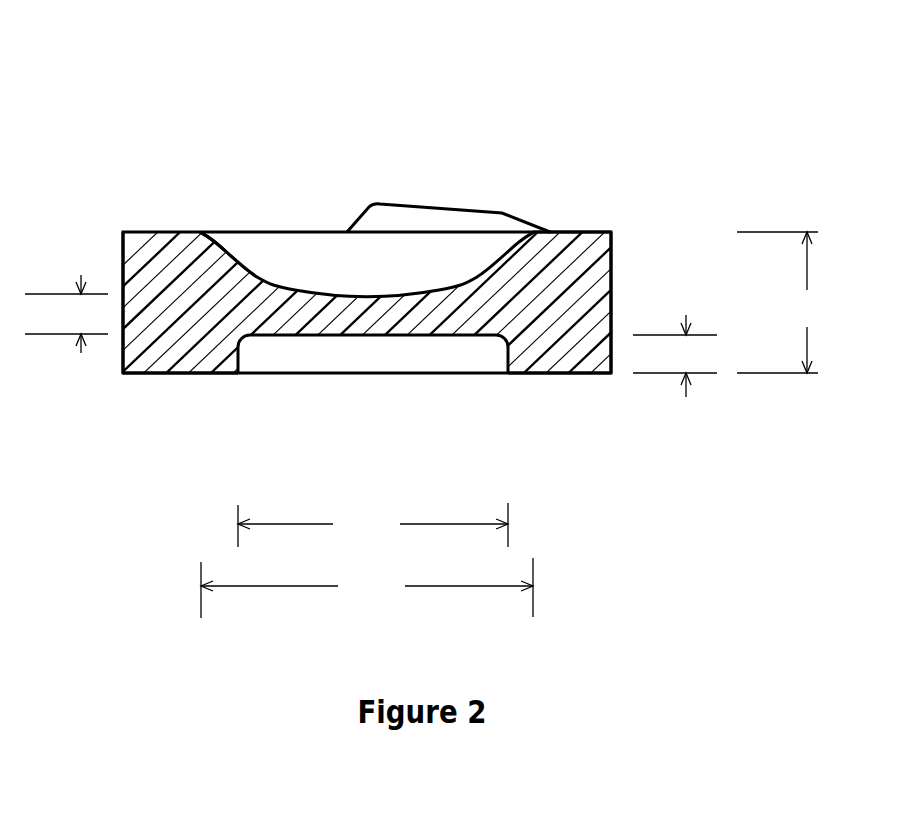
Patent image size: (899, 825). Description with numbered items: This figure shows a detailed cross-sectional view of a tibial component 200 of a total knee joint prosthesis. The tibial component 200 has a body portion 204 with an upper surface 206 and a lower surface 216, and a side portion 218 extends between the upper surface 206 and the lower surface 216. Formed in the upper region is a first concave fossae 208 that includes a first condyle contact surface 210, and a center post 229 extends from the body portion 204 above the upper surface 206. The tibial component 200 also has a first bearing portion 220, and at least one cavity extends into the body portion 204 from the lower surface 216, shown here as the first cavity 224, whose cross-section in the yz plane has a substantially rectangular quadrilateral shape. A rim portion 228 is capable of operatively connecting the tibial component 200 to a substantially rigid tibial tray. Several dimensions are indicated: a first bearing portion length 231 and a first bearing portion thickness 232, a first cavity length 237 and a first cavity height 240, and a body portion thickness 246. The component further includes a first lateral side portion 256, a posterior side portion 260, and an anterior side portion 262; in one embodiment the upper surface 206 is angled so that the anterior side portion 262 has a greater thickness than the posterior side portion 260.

The tibial component 200 is at (612, 94).
The body portion 204 is at (176, 272).
The upper surface 206 is at (595, 232).
The first concave fossae 208 is at (329, 250).
The first condyle contact surface 210 is at (258, 272).
The lower surface 216 is at (588, 373).
The side portion 218 is at (612, 283).
The first bearing portion 220 is at (284, 313).
The first cavity 224 is at (442, 358).
The rim portion 228 is at (123, 363).
The center post 229 is at (420, 213).
The first bearing portion length 231 is at (367, 588).
The first bearing portion thickness 232 is at (66, 314).
The first cavity length 237 is at (373, 525).
The first cavity height 240 is at (675, 356).
The body portion thickness 246 is at (782, 302).
The first lateral side portion 256 is at (198, 355).
The posterior side portion 260 is at (612, 318).
The anterior side portion 262 is at (123, 263).